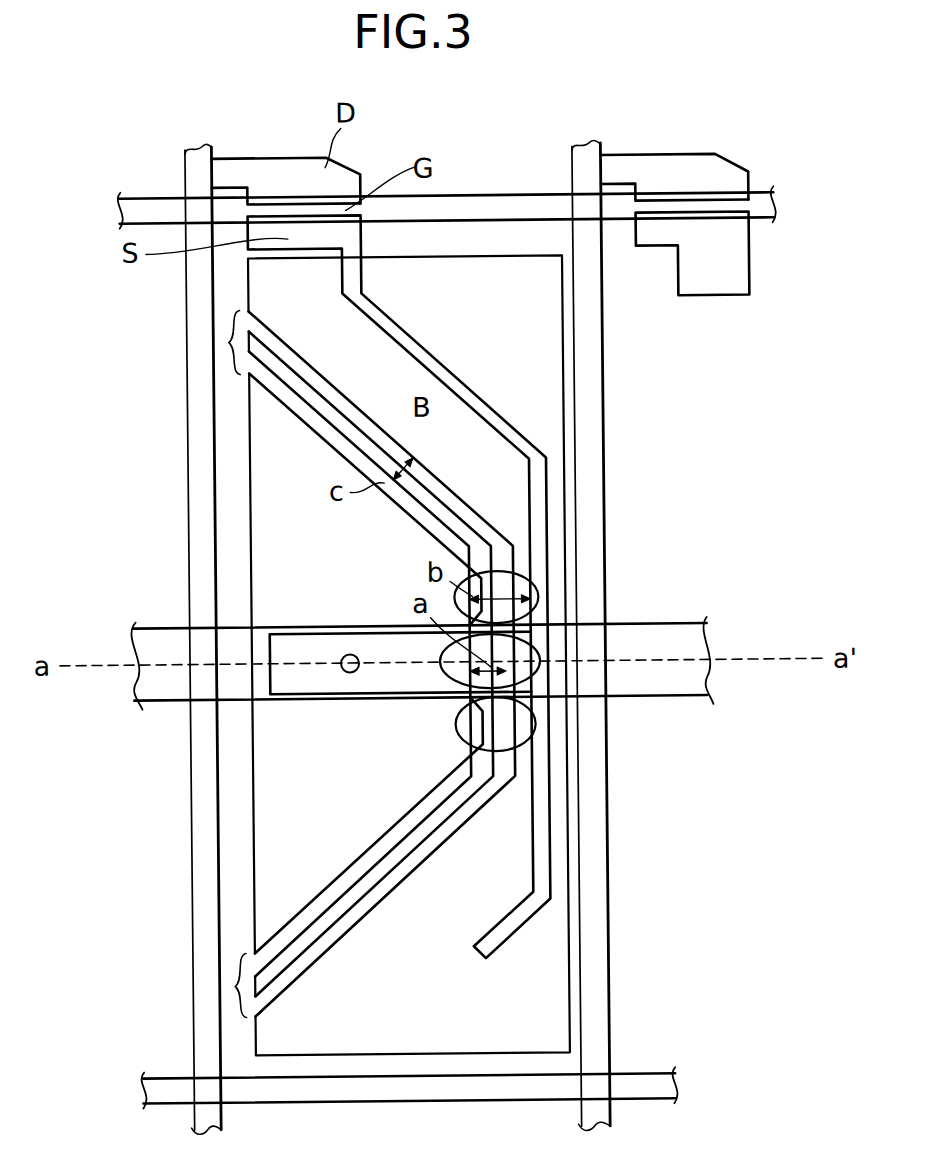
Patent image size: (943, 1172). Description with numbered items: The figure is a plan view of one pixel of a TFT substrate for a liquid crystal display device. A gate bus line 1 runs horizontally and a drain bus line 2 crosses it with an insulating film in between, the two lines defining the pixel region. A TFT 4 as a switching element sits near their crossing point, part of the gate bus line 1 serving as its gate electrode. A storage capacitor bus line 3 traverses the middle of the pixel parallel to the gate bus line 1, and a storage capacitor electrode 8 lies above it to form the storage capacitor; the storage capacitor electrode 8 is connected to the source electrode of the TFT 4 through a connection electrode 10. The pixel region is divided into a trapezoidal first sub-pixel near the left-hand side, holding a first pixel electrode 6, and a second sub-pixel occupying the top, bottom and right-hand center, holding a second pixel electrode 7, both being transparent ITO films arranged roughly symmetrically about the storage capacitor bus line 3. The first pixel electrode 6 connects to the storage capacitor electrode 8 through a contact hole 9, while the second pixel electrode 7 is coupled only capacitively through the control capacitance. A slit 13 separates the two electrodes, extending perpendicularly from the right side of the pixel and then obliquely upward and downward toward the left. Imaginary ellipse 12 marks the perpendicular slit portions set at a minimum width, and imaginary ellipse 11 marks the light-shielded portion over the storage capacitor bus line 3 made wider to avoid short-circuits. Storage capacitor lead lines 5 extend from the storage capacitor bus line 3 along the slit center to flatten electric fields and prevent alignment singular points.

The gate bus line 1 is at (152, 208).
The drain bus line 2 is at (206, 319).
The storage capacitor bus line 3 is at (167, 637).
The TFT 4 is at (278, 166).
The storage capacitor lead lines 5 is at (286, 375).
The first pixel electrode 6 is at (282, 496).
The second pixel electrode 7 is at (533, 346).
The storage capacitor electrode 8 is at (316, 678).
The contact hole 9 is at (348, 655).
The connection electrode 10 is at (542, 496).
The imaginary ellipse 11 is at (541, 649).
The imaginary ellipse 12 is at (539, 595).
The slit 13 is at (228, 341).